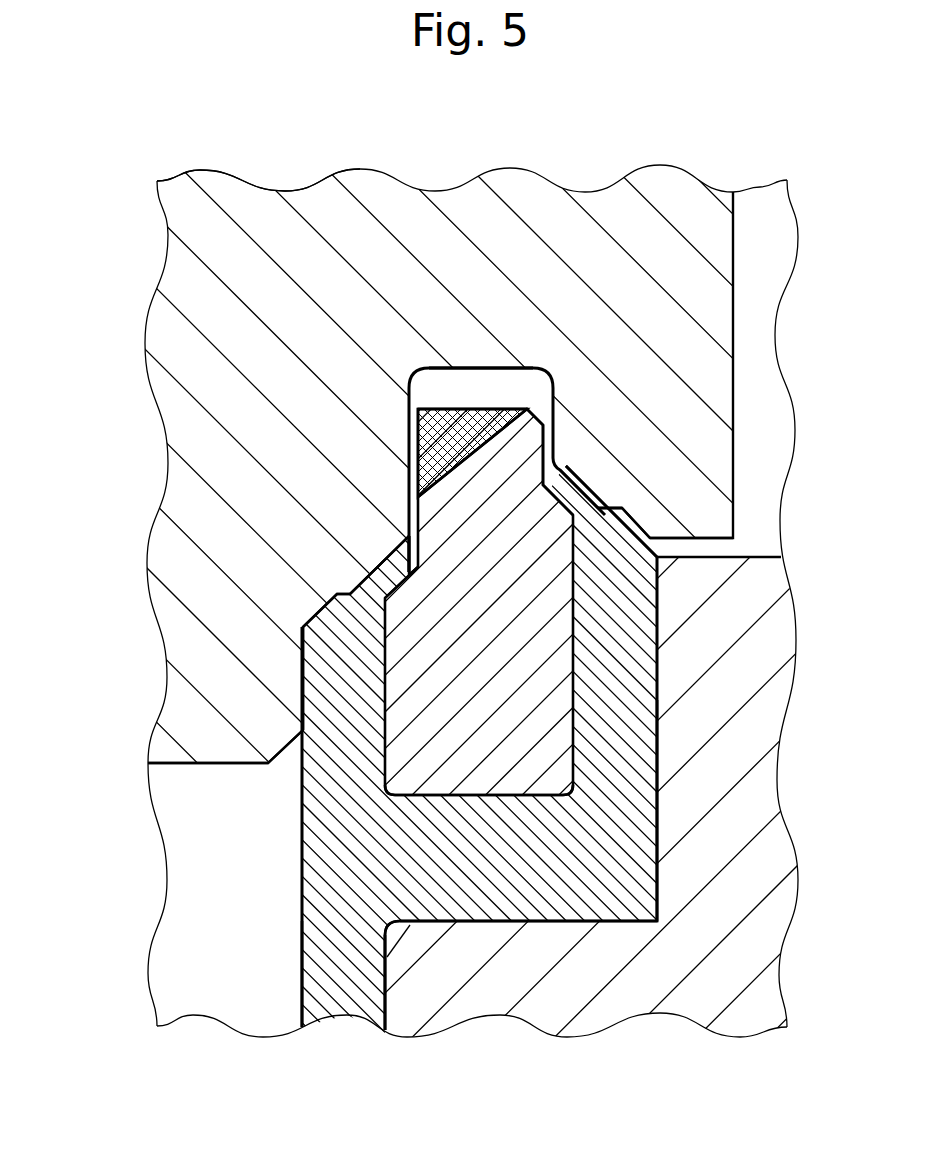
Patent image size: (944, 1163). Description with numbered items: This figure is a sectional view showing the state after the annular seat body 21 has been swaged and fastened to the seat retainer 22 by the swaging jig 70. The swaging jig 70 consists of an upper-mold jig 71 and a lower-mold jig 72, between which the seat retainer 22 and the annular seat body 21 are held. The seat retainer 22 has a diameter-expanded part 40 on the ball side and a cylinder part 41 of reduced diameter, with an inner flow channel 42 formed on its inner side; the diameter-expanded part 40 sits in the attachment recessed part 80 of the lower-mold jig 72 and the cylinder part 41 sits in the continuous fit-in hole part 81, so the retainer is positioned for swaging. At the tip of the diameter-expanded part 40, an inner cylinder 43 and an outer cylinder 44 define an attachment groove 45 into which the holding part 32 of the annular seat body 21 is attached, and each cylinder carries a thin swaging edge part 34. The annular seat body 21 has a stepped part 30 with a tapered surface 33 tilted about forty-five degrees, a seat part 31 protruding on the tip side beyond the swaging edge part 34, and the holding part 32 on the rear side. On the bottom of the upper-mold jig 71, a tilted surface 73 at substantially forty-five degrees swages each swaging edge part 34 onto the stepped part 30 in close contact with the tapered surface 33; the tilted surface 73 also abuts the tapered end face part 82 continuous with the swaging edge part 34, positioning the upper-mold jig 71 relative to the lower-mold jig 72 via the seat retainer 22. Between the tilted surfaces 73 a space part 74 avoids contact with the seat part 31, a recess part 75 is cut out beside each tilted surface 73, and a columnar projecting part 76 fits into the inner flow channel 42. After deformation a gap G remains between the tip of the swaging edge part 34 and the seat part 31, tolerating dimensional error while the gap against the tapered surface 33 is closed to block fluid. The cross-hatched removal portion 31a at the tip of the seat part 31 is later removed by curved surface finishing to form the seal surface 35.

The swaging jig 70 is at (746, 237).
The upper-mold jig 71 is at (273, 293).
The lower-mold jig 72 is at (638, 970).
The tilted surface 73 is at (553, 445).
The space part 74 is at (497, 372).
The recess part 75 is at (630, 522).
The columnar projecting part 76 is at (202, 702).
The stepped part 30 is at (585, 496).
The seat part 31 is at (510, 457).
The removal portion 31a is at (462, 432).
The seal surface 35 is at (445, 405).
The annular seat body 21 is at (507, 637).
The seat retainer 22 is at (512, 895).
The holding part 32 is at (508, 720).
The tapered surface 33 is at (600, 502).
The swaging edge part 34 is at (592, 500).
The tapered end face part 82 is at (615, 507).
The gap G is at (413, 560).
The diameter-expanded part 40 is at (623, 858).
The cylinder part 41 is at (343, 955).
The inner flow channel 42 is at (302, 961).
The inner cylinder 43 is at (335, 702).
The outer cylinder 44 is at (620, 668).
The attachment groove 45 is at (477, 795).
The attachment recessed part 80 is at (637, 890).
The fit-in hole part 81 is at (380, 988).